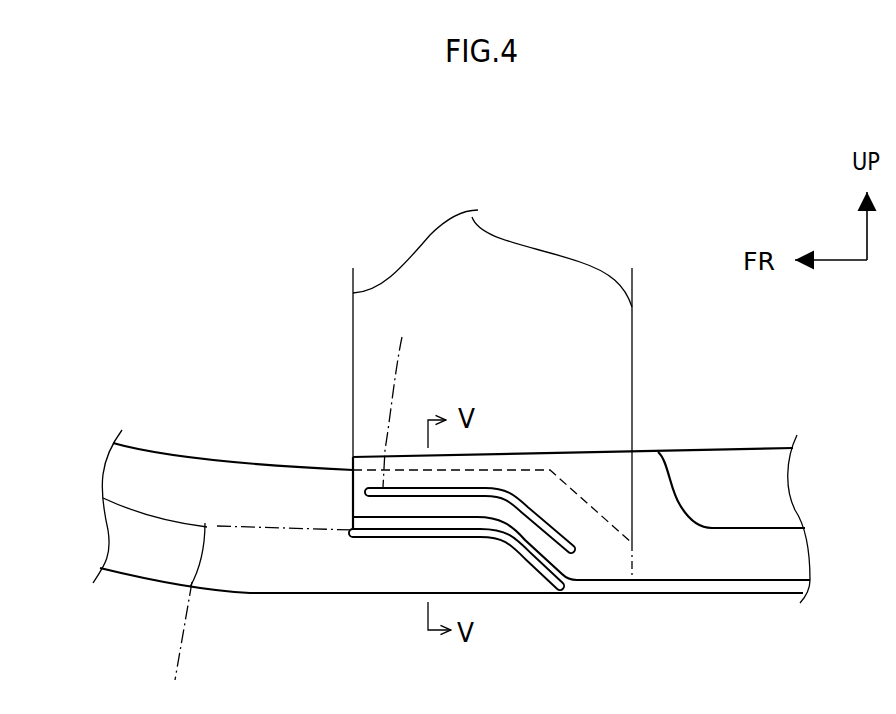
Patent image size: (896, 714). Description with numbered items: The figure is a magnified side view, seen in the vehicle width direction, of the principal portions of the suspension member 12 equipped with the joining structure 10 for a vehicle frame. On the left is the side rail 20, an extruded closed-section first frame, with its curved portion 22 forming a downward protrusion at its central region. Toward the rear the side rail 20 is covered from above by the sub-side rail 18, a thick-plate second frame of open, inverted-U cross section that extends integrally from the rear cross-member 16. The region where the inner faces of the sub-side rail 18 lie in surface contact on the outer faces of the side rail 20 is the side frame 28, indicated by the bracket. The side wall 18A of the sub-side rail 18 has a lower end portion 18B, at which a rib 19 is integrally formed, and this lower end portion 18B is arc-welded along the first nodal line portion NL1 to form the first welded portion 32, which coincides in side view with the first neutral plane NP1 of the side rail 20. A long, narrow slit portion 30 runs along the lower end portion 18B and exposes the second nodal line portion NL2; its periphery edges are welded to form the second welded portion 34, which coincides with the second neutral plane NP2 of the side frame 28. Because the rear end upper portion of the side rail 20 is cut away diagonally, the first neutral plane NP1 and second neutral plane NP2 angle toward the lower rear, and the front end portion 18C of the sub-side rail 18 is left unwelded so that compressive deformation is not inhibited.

The joining structure 10 is at (360, 618).
The suspension member 12 is at (229, 402).
The rear cross-member 16 is at (768, 440).
The sub-side rail 18 is at (530, 499).
The side wall 18A is at (658, 452).
The lower end portion 18B is at (456, 614).
The front end portion 18C is at (352, 492).
The rib 19 is at (669, 587).
The side rail 20 is at (180, 450).
The curved portion 22 is at (148, 585).
The side frame 28 is at (492, 385).
The slit portion 30 is at (483, 457).
The first welded portion 32 is at (401, 550).
The second welded portion 34 is at (470, 478).
The first nodal line portion NL1 is at (210, 648).
The first neutral plane NP1 is at (210, 648).
The second nodal line portion NL2 is at (422, 396).
The second neutral plane NP2 is at (422, 396).